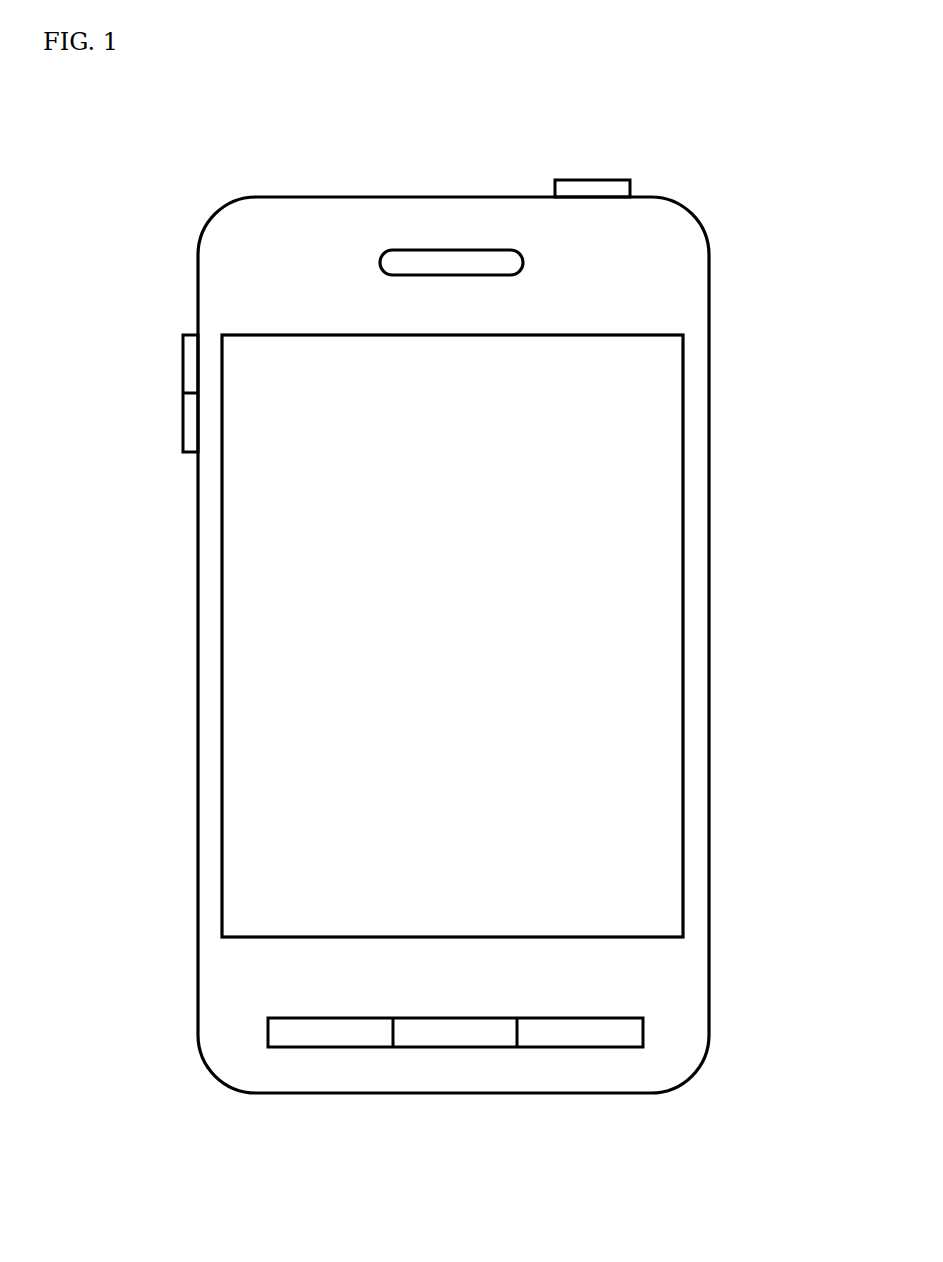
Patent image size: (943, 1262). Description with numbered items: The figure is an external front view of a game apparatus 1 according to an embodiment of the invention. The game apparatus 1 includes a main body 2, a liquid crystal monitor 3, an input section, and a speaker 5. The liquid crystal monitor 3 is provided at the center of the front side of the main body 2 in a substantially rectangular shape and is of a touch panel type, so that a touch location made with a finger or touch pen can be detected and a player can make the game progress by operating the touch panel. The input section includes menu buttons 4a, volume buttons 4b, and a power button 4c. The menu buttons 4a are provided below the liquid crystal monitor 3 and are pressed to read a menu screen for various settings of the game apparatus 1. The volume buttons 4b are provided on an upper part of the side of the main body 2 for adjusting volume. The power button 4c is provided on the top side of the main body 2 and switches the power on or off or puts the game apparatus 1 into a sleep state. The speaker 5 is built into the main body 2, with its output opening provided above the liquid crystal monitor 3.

The game apparatus 1 is at (717, 175).
The main body 2 is at (707, 275).
The liquid crystal monitor 3 is at (683, 543).
The menu buttons 4a is at (425, 1062).
The volume buttons 4b is at (183, 430).
The power button 4c is at (594, 180).
The speaker 5 is at (484, 248).